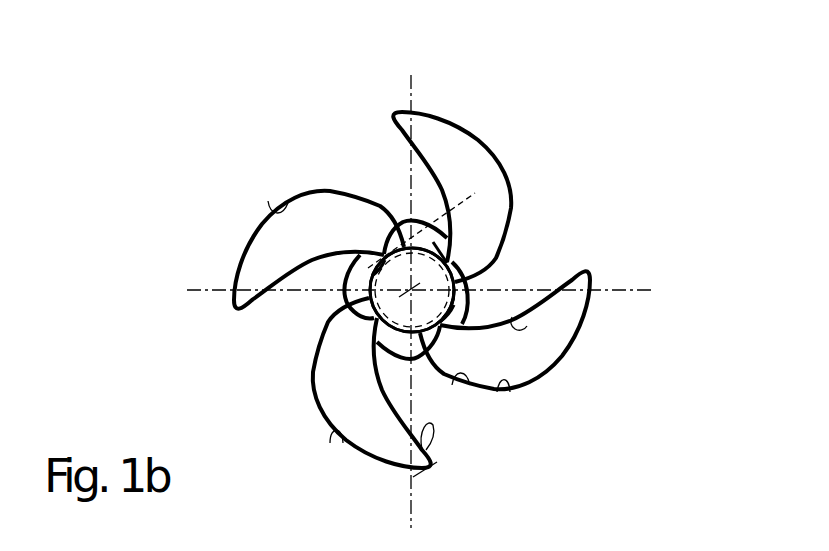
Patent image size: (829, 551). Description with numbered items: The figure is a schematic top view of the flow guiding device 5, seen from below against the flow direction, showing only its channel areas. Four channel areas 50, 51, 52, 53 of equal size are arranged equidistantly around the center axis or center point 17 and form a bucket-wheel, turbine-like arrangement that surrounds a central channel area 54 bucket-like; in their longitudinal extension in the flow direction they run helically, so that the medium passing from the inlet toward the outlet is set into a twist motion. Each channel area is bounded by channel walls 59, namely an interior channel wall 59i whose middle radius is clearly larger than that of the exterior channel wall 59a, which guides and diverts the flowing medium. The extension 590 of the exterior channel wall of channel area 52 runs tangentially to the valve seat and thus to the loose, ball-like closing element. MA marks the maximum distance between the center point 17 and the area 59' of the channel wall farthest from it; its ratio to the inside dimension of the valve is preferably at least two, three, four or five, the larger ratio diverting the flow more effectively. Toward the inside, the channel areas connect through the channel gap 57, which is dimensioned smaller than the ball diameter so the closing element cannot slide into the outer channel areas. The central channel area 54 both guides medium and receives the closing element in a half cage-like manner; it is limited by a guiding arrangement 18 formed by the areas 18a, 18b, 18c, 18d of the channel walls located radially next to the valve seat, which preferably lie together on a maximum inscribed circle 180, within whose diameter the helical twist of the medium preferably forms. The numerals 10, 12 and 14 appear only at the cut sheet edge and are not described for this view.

The flow guiding device 5 is at (532, 87).
The pump housing 10 is at (709, 540).
The inlet 12 is at (258, 547).
The outlet 14 is at (589, 543).
The center axis/center point 17 is at (457, 281).
The guiding arrangement 18 is at (458, 290).
The area of channel wall 18a is at (372, 276).
The area of channel wall 18b is at (433, 242).
The area of channel wall 18c is at (470, 318).
The area of channel wall 18d is at (395, 335).
The maximum inscribed circle 180 is at (369, 291).
The channel area 50 is at (495, 195).
The channel area 51 is at (573, 330).
The channel area 52 is at (315, 395).
The channel area 53 is at (252, 272).
The central channel area 54 is at (400, 268).
The channel gap 57 is at (372, 313).
The channel wall 59 is at (347, 297).
The exterior channel wall 59a is at (505, 390).
The interior channel wall 59i is at (557, 290).
The area of the channel wall farthest from the center 59' is at (450, 487).
The extension of exterior channel wall 590 is at (385, 250).
The maximum distance MA is at (433, 460).